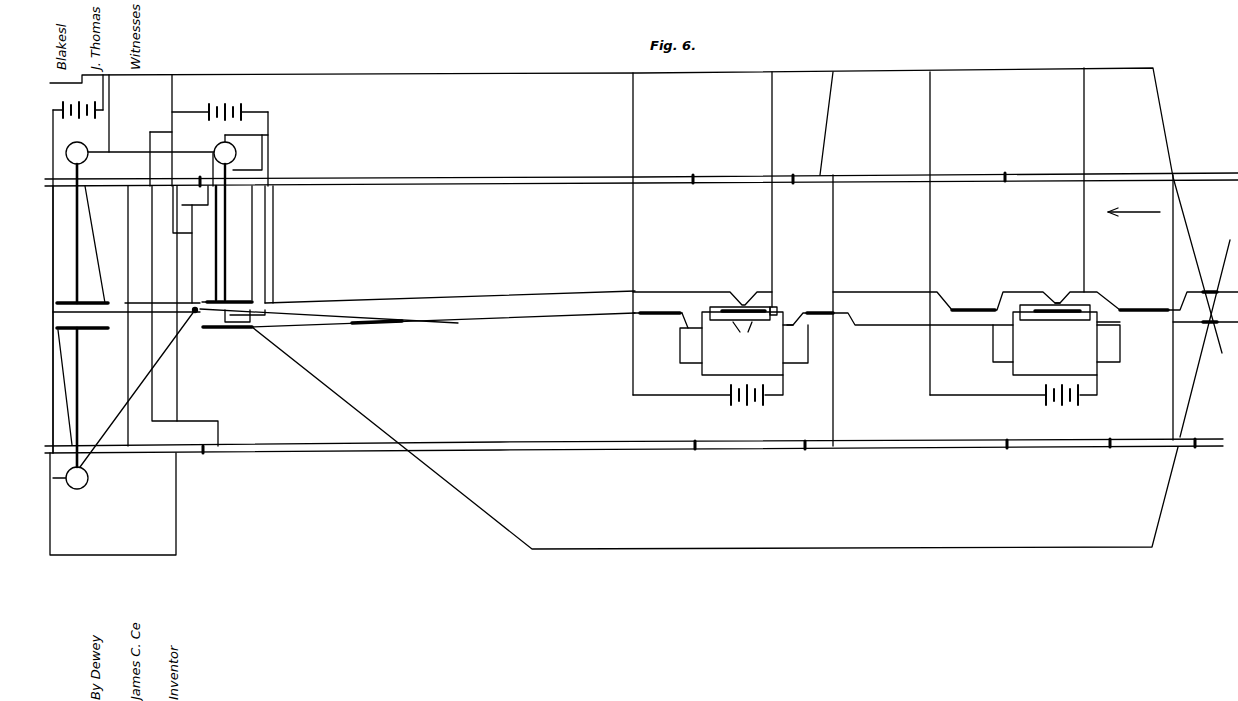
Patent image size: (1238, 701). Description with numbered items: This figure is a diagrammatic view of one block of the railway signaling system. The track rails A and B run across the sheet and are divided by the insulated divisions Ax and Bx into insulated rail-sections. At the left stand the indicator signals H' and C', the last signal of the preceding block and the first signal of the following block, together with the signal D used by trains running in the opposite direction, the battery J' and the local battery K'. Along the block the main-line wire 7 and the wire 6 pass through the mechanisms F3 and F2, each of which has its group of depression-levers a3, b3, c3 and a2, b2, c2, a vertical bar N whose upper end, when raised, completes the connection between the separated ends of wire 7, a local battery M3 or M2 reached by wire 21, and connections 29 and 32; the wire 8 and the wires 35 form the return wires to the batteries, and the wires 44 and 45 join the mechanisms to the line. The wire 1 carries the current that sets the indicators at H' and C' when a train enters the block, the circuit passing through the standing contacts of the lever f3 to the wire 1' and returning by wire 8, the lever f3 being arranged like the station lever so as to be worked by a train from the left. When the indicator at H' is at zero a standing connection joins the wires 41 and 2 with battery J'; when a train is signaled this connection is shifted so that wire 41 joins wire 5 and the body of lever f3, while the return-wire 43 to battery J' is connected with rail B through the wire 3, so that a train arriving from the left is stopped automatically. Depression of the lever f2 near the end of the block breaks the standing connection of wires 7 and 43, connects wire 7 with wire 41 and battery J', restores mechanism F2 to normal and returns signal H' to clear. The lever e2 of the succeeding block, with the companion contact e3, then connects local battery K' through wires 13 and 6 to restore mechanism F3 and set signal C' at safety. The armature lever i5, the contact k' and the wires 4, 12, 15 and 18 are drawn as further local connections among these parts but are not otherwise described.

The wire 1 is at (640, 347).
The wire 2 is at (212, 218).
The wire 3 is at (158, 132).
The wire 4 is at (252, 243).
The wire 5 is at (273, 218).
The wire 6 is at (168, 310).
The main-line wire 7 is at (436, 301).
The return wire 8 is at (356, 73).
The wire 12 is at (53, 240).
The wire 13 is at (96, 250).
The wire 15 is at (65, 370).
The wire 18 is at (192, 254).
The wire 21 is at (746, 375).
The relay wire 29 is at (680, 348).
The relay wire 32 is at (784, 354).
The wire 35 is at (772, 240).
The wire 41 is at (268, 138).
The return-wire 43 is at (172, 95).
The connecting wire 44 is at (633, 232).
The connecting wire 45 is at (833, 254).
The track rail A is at (500, 167).
The insulated division Ax is at (601, 166).
The track rail B is at (524, 448).
The insulated division Bx is at (697, 457).
The signal C' is at (133, 264).
The signal D is at (70, 478).
The signal H' is at (225, 217).
The battery J' is at (220, 102).
The local battery K' is at (78, 96).
The local battery M2 is at (1013, 398).
The local battery M3 is at (708, 398).
The vertical bar N is at (1058, 292).
The mechanism F2 is at (1055, 329).
The mechanism F3 is at (743, 331).
The depression-lever a2 is at (1179, 306).
The depression-lever a3 is at (900, 309).
The depression-lever b2 is at (1063, 298).
The depression-lever b3 is at (741, 298).
The depression-lever c2 is at (973, 300).
The depression-lever c3 is at (657, 303).
The lever e2 is at (82, 292).
The contact e3 is at (82, 340).
The lever f2 is at (227, 293).
The lever f3 is at (234, 331).
The armature lever i5 is at (77, 262).
The contact k' is at (377, 337).
The wire 1' is at (276, 244).